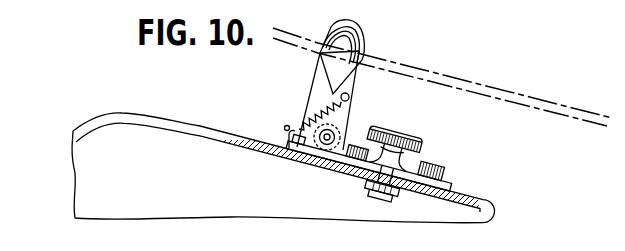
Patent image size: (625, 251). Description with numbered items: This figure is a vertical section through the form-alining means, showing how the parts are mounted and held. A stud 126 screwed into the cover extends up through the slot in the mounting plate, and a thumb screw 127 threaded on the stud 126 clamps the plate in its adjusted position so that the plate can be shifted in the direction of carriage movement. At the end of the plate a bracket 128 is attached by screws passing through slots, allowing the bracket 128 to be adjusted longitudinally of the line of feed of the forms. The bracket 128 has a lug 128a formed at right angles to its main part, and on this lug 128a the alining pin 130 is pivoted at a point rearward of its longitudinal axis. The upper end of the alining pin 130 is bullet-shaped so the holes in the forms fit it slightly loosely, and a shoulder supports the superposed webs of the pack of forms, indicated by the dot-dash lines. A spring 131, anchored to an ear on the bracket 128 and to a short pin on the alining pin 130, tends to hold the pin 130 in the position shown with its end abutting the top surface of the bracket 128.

The stud 126 is at (358, 188).
The thumb screw 127 is at (419, 143).
The bracket 128 is at (452, 192).
The lug 128a is at (341, 125).
The alining pin 130 is at (321, 71).
The spring 131 is at (309, 110).